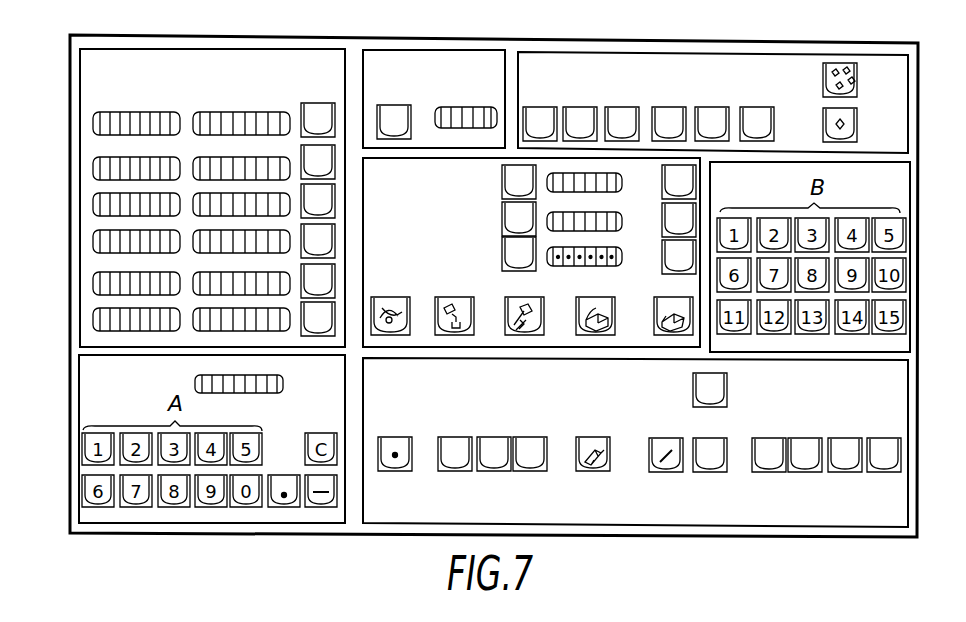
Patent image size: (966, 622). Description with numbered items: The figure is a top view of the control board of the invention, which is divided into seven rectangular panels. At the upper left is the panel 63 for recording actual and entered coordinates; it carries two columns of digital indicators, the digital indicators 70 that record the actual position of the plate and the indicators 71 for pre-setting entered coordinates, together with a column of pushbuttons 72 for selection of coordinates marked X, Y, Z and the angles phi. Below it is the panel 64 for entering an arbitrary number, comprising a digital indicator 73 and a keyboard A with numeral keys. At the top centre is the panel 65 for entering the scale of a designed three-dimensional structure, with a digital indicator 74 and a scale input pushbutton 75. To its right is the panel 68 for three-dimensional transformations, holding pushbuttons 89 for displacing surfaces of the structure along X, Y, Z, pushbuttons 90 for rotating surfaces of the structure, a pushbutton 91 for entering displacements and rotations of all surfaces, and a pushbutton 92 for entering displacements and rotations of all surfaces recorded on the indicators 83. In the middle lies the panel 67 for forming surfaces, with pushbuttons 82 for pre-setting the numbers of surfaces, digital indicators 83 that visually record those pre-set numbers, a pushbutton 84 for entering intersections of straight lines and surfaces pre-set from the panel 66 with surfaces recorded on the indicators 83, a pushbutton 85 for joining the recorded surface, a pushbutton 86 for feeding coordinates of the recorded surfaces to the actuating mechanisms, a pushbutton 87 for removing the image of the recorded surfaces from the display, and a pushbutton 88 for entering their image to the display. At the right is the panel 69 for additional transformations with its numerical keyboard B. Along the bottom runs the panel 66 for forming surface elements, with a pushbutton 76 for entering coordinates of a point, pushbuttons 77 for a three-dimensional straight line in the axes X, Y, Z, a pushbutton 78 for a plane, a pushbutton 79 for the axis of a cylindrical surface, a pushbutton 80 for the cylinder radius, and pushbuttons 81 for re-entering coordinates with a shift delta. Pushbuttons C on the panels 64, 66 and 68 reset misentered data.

The panel for recording actual and entered coordinates 63 is at (86, 82).
The panel for entering an arbitrary number 64 is at (86, 390).
The panel for entering a scale 65 is at (393, 56).
The panel for forming elements of the surface 66 is at (898, 502).
The panel for forming surfaces 67 is at (409, 173).
The panel for three-dimensional transformations 68 is at (661, 58).
The panel for performing additional transformations 69 is at (909, 188).
The digital indicators 70 is at (96, 204).
The indicators 71 is at (237, 205).
The pushbuttons for selection of coordinates 72 is at (339, 130).
The digital indicator 73 is at (283, 384).
The digital indicator 74 is at (463, 107).
The scale input pushbutton 75 is at (391, 105).
The pushbutton for entering coordinates of a point 76 is at (398, 437).
The pushbuttons for entering coordinates of a three-dimensional straight line 77 is at (524, 437).
The pushbutton for entering coordinates of a plane 78 is at (593, 437).
The pushbutton for entering coordinates of the axis of a cylindrical surface 79 is at (658, 438).
The pushbutton for entering the radius of cylinder 80 is at (716, 438).
The pushbuttons for re-entering coordinates with a shift 81 is at (872, 438).
The pushbuttons for pre-setting the numbers of surfaces 82 is at (501, 252).
The digital indicators for visually recording pre-set numbers 83 is at (622, 185).
The pushbutton for entering intersections 84 is at (400, 300).
The pushbutton for joining the surface 85 is at (455, 298).
The pushbutton for feeding coordinates to the actuating mechanisms 86 is at (536, 300).
The pushbutton for removing the image of surfaces 87 is at (608, 298).
The pushbutton for entering the image of surfaces 88 is at (662, 300).
The pushbuttons for displacing surfaces 89 is at (618, 108).
The pushbuttons for rotating surfaces 90 is at (751, 108).
The pushbutton for entering displacements and rotations of all surfaces 91 is at (823, 80).
The pushbutton for entering displacements and rotations of recorded surfaces 92 is at (823, 123).